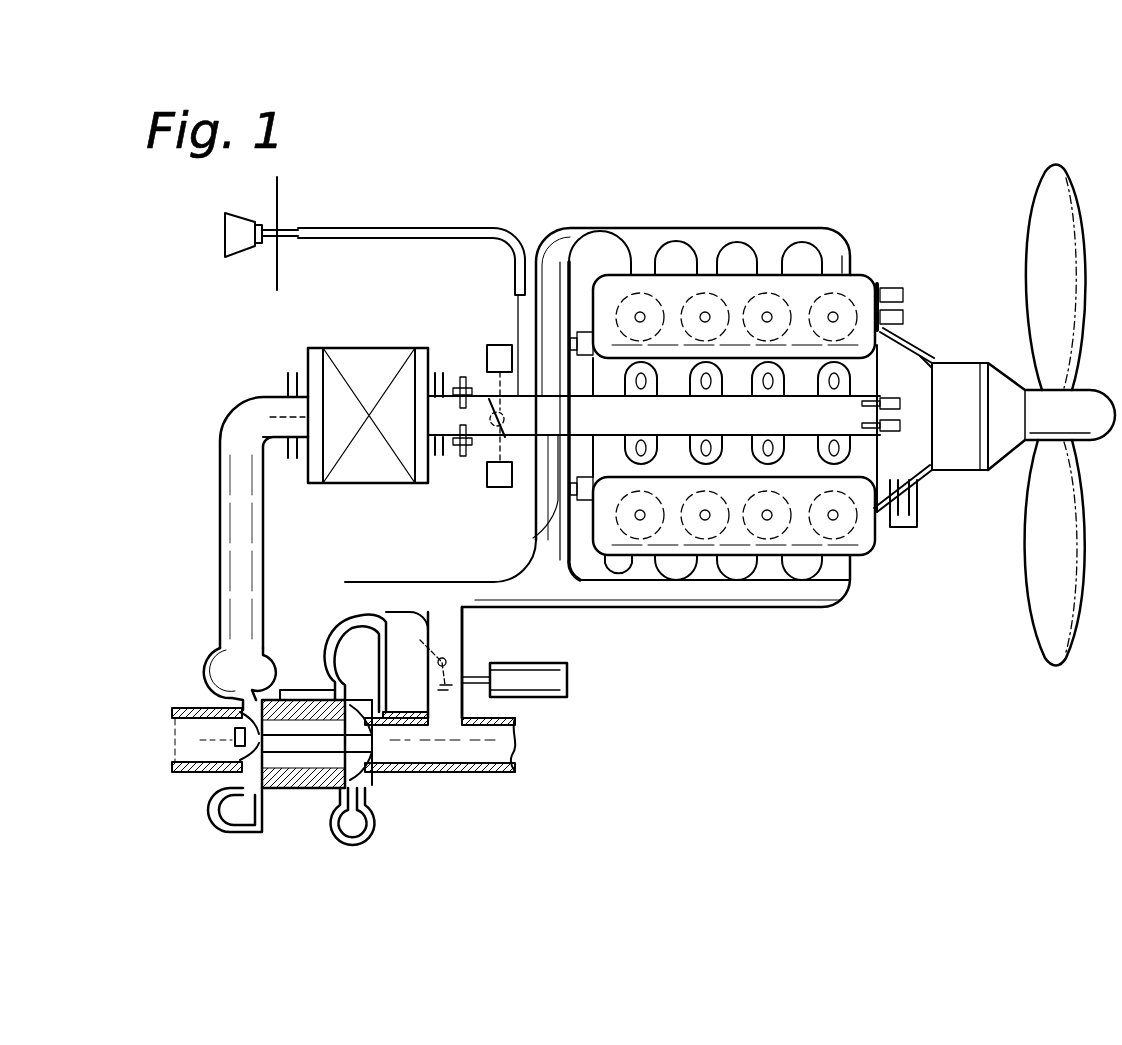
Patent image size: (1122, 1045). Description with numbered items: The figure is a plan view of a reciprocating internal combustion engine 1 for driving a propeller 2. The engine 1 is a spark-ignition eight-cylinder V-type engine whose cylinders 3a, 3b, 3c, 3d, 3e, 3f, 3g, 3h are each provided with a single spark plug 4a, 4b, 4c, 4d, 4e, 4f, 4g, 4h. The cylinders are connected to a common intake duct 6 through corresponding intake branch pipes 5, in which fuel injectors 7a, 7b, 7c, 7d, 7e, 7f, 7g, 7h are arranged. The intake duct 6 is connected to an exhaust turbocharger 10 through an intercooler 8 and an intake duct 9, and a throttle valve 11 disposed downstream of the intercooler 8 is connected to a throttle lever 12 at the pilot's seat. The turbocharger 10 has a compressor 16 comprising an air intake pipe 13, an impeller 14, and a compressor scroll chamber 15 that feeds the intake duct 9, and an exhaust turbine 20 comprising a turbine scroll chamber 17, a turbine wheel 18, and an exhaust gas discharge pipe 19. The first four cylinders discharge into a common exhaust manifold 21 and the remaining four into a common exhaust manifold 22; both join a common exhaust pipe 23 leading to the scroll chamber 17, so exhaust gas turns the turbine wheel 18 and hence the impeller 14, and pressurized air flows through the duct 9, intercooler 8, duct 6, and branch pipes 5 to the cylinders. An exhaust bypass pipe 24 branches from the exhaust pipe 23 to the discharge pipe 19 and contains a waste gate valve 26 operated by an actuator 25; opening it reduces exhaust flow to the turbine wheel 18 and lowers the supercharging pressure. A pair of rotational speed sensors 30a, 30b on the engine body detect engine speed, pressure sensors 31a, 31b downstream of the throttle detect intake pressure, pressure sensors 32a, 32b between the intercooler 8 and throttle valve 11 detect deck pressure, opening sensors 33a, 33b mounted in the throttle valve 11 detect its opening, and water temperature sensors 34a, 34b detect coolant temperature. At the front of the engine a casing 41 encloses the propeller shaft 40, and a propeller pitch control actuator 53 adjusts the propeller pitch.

The internal combustion engine 1 is at (922, 258).
The propeller 2 is at (1045, 212).
The cylinder 3a is at (835, 293).
The cylinder 3b is at (767, 293).
The cylinder 3c is at (705, 293).
The cylinder 3d is at (640, 293).
The cylinder 3e is at (836, 540).
The cylinder 3f is at (768, 540).
The cylinder 3g is at (706, 540).
The cylinder 3h is at (640, 540).
The spark plug 4a is at (834, 312).
The spark plug 4b is at (767, 312).
The spark plug 4c is at (705, 312).
The spark plug 4d is at (640, 312).
The spark plug 4e is at (833, 522).
The spark plug 4f is at (767, 522).
The spark plug 4g is at (705, 522).
The spark plug 4h is at (640, 522).
The intake branch pipe 5 is at (898, 350).
The intake duct 6 is at (926, 372).
The fuel injector 7a is at (836, 373).
The fuel injector 7b is at (770, 373).
The fuel injector 7c is at (706, 373).
The fuel injector 7d is at (641, 373).
The fuel injector 7e is at (835, 460).
The fuel injector 7f is at (770, 460).
The fuel injector 7g is at (706, 460).
The fuel injector 7h is at (641, 460).
The intercooler 8 is at (350, 463).
The intake duct 9 is at (232, 542).
The exhaust turbocharger 10 is at (300, 690).
The throttle valve 11 is at (492, 430).
The throttle lever 12 is at (225, 237).
The air intake pipe 13 is at (188, 752).
The impeller 14 is at (245, 740).
The compressor scroll chamber 15 is at (220, 678).
The compressor 16 is at (242, 832).
The turbine scroll chamber 17 is at (348, 622).
The turbine wheel 18 is at (372, 765).
The exhaust gas discharge pipe 19 is at (470, 752).
The exhaust turbine 20 is at (352, 848).
The exhaust manifold 21 is at (568, 250).
The exhaust manifold 22 is at (582, 604).
The exhaust pipe 23 is at (410, 583).
The exhaust bypass pipe 24 is at (462, 652).
The actuator 25 is at (538, 690).
The waste gate valve 26 is at (436, 660).
The rotational speed sensor 30a is at (903, 295).
The rotational speed sensor 30b is at (903, 316).
The pressure sensor 31a is at (900, 404).
The pressure sensor 31b is at (900, 426).
The pressure sensor 32a is at (460, 385).
The pressure sensor 32b is at (458, 450).
The opening sensor 33a is at (492, 345).
The opening sensor 33b is at (500, 488).
The water temperature sensor 34a is at (530, 268).
The water temperature sensor 34b is at (533, 538).
The propeller shaft 40 is at (1033, 440).
The casing 41 is at (966, 474).
The propeller pitch control actuator 53 is at (905, 527).